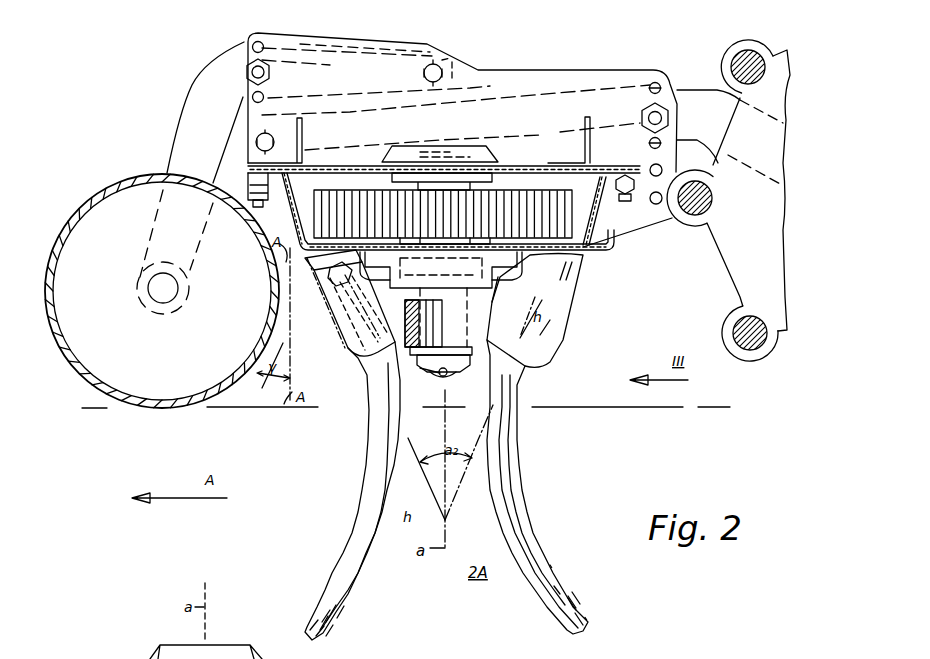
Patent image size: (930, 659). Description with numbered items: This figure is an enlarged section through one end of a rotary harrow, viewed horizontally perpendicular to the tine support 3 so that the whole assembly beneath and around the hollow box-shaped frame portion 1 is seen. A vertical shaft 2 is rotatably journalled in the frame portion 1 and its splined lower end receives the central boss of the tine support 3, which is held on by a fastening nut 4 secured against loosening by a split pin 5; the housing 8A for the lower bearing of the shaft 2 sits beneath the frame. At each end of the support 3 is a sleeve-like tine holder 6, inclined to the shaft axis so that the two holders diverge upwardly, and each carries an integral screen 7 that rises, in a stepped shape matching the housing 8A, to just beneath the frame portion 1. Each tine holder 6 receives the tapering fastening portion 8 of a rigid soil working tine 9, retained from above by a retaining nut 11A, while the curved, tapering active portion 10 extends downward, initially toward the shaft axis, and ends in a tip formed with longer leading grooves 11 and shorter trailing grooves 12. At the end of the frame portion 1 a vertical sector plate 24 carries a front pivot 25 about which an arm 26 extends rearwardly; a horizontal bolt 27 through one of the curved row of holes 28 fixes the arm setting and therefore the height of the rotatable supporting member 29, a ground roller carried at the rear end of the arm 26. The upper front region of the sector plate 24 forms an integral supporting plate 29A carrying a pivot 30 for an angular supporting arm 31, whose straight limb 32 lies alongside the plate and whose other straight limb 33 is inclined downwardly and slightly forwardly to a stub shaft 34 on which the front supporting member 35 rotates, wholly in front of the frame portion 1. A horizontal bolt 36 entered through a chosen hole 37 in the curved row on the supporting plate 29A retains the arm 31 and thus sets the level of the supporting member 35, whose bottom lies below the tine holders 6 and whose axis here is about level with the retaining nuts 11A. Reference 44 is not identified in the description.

The hollow box-shaped frame portion 1 is at (546, 162).
The vertical shaft 2 is at (442, 154).
The tine support 3 is at (464, 356).
The fastening nut 4 is at (456, 378).
The split pin 5 is at (433, 379).
The tine holder 6 is at (330, 346).
The screen 7 is at (320, 270).
The fastening portion 8 is at (328, 280).
The housing 8A is at (506, 292).
The soil working tine 9 is at (350, 542).
The active soil working portion 10 is at (513, 458).
The leading recess or groove 11 is at (580, 607).
The retaining nut 11A is at (315, 303).
The trailing recess or groove 12 is at (333, 624).
The sector plate 24 is at (525, 72).
The pivot 25 is at (256, 142).
The arm 26 is at (707, 92).
The horizontal bolt 27 is at (670, 118).
The hole 28 is at (655, 81).
The rotatable supporting member 29 is at (735, 281).
The supporting plate 29A is at (403, 48).
The pivot 30 is at (450, 66).
The angular supporting arm 31 is at (190, 83).
The straight limb 32 is at (327, 42).
The straight limb 33 is at (185, 118).
The stub shaft 34 is at (170, 310).
The supporting member 35 is at (150, 410).
The horizontal bolt 36 is at (246, 75).
The hole 37 is at (267, 96).
The gear 44 is at (572, 216).